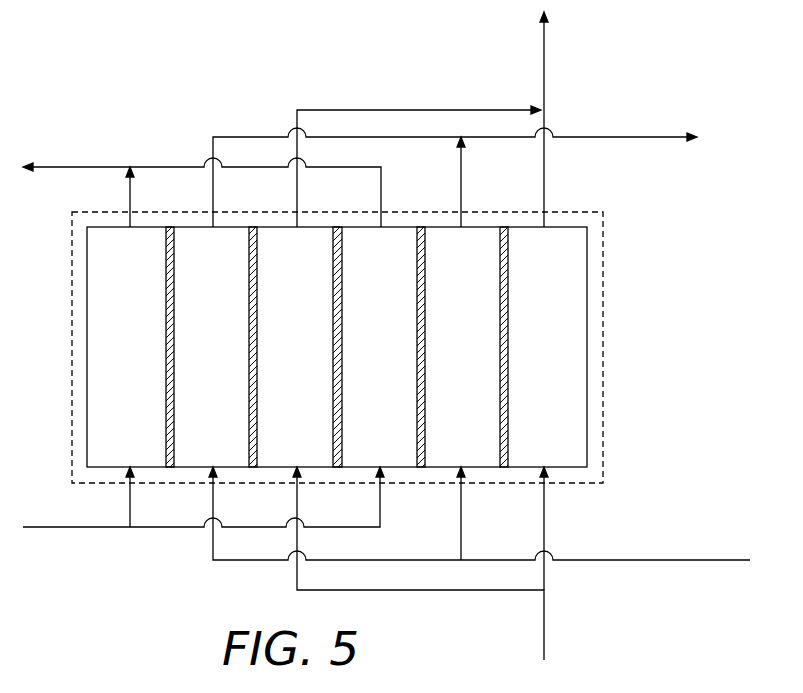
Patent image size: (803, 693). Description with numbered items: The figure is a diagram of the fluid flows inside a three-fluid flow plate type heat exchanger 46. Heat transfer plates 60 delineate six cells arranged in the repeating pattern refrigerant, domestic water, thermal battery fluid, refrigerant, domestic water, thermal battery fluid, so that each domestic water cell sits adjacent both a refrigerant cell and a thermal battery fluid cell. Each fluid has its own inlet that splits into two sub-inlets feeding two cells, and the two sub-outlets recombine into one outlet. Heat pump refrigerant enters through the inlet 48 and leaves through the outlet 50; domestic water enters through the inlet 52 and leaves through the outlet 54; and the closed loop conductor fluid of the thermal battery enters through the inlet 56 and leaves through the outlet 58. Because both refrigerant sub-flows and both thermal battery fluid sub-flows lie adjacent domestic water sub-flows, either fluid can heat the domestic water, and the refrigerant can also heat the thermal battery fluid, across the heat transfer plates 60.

The heat exchanger 46 is at (603, 338).
The inlet of refrigerant flow 48 is at (57, 527).
The outlet of refrigerant flow 50 is at (60, 167).
The inlet of domestic water flow 52 is at (672, 560).
The outlet of domestic water flow 54 is at (600, 137).
The inlet of closed loop conductor fluid of thermal battery 56 is at (544, 625).
The outlet of closed loop conductor fluid of thermal battery 58 is at (544, 52).
The heat transfer plate 60 is at (176, 243).